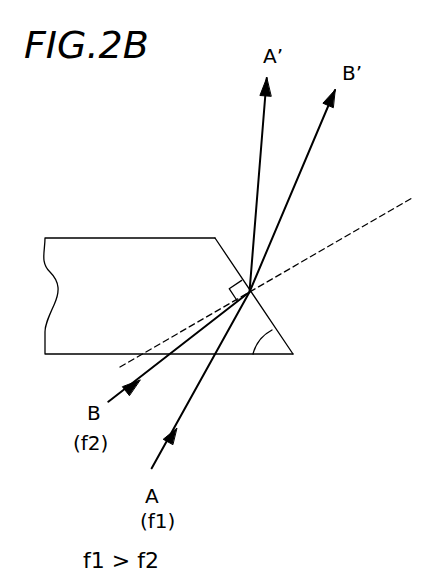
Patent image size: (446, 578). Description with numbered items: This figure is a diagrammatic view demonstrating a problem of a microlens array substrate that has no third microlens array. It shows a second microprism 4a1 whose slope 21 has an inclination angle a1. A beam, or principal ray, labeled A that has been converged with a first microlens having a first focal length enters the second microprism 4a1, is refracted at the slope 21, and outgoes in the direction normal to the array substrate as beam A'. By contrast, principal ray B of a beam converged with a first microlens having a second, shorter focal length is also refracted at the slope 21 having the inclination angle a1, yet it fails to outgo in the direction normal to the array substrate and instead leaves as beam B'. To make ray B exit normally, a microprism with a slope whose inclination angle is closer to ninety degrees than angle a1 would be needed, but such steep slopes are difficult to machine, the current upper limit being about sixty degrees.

The second microprism 4a1 is at (99, 262).
The slope 21 is at (268, 313).
The inclination angle a1 is at (265, 334).